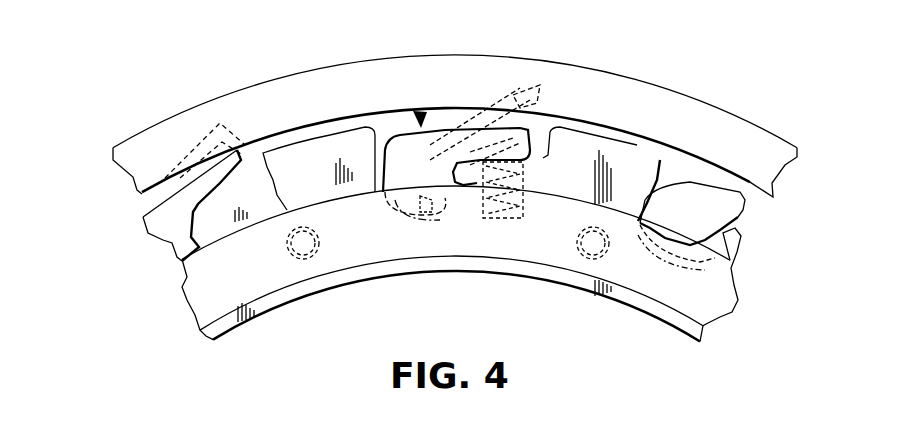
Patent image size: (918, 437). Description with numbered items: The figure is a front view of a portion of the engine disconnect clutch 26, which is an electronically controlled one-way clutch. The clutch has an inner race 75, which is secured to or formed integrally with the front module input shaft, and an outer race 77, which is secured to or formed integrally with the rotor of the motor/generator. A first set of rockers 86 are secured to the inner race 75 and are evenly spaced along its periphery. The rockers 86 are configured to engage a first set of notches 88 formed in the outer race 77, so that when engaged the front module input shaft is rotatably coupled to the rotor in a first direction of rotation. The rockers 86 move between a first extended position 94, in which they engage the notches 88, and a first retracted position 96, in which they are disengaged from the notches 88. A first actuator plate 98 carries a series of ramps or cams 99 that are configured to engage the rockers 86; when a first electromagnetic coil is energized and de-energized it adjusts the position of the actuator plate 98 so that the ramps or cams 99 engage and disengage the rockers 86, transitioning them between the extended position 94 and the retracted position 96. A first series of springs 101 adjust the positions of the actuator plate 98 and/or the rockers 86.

The engine disconnect clutch 26 is at (112, 272).
The inner race 75 is at (665, 151).
The outer race 77 is at (750, 190).
The first set of rockers 86 is at (418, 115).
The first set of notches 88 is at (518, 88).
The first extended position 94 is at (537, 120).
The first retracted position 96 is at (575, 130).
The first actuator plate 98 is at (627, 300).
The ramps or cams 99 is at (430, 213).
The first series of springs 101 is at (304, 262).